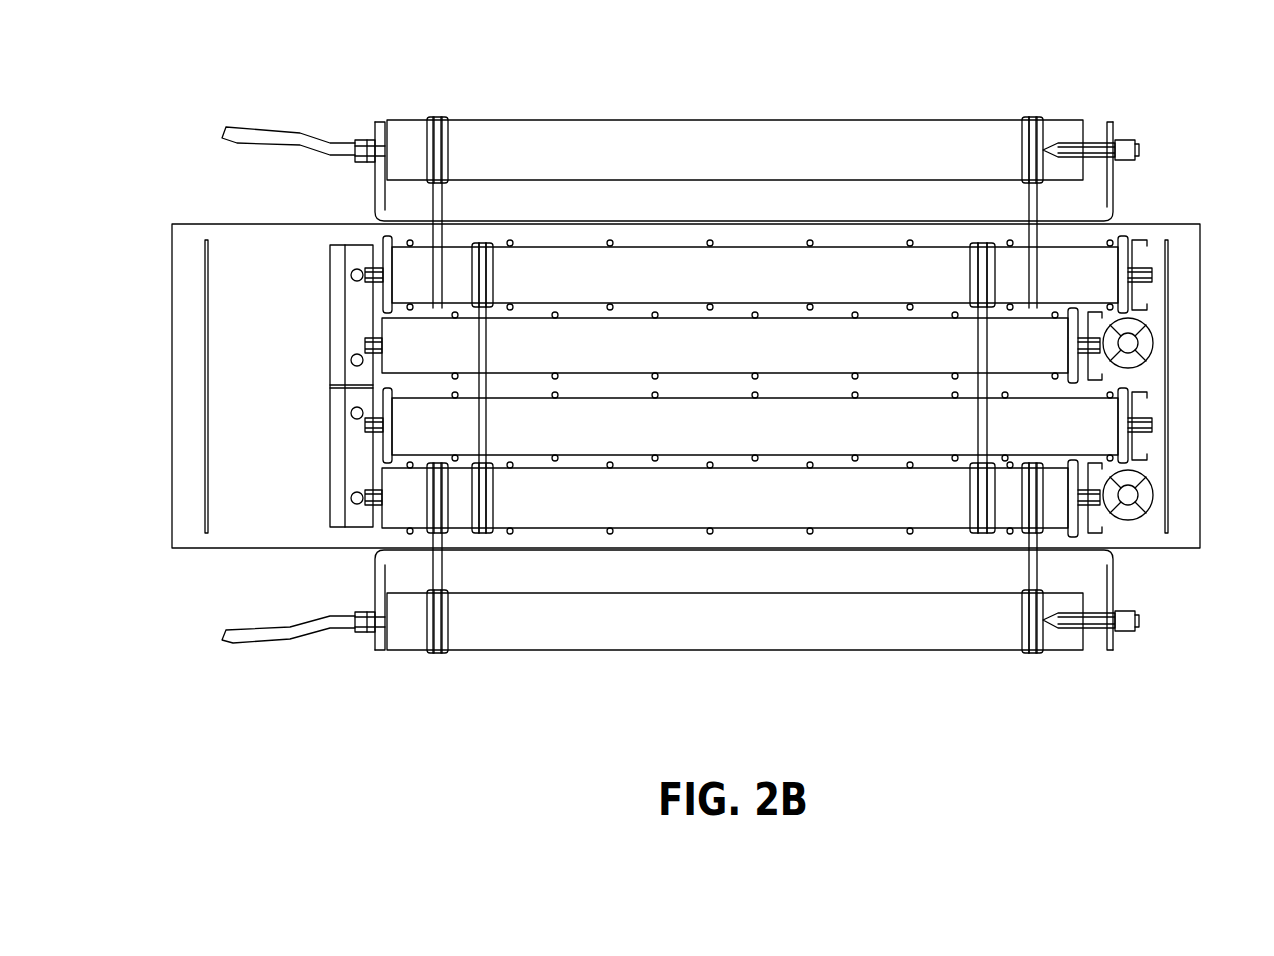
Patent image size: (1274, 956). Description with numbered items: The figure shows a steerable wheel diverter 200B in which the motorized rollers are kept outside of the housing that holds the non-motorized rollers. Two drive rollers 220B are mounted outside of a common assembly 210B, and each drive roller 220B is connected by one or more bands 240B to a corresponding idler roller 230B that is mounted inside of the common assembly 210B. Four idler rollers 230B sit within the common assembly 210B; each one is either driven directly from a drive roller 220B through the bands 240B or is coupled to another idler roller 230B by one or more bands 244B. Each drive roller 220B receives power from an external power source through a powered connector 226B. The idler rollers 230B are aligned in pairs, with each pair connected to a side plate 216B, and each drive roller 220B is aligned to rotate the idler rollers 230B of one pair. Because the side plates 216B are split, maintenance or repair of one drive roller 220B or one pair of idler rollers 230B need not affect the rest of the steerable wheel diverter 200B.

The steerable wheel diverter 200B is at (810, 45).
The common assembly 210B is at (257, 223).
The side plate 216B is at (333, 350).
The drive roller 220B is at (945, 135).
The powered connector 226B is at (273, 133).
The idler roller 230B is at (590, 340).
The band 240B is at (433, 638).
The band 244B is at (482, 285).